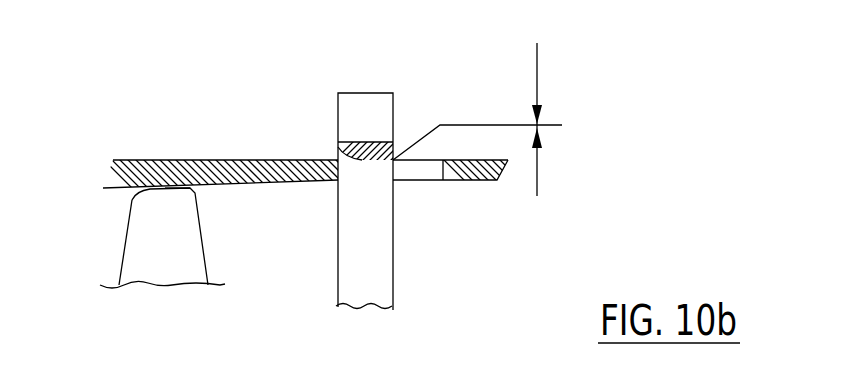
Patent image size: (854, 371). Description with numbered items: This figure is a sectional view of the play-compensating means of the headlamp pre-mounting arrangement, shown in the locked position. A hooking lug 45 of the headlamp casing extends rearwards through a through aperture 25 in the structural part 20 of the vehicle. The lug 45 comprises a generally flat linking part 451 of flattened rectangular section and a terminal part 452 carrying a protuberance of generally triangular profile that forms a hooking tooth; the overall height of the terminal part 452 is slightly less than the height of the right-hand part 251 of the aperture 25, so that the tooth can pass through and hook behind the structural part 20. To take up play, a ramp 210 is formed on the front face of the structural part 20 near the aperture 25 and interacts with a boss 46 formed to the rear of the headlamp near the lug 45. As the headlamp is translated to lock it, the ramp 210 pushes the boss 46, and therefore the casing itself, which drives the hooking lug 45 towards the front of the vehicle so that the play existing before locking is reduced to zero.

The structural part 20 is at (257, 163).
The through aperture 25 is at (432, 193).
The right-hand part of aperture 251 is at (418, 170).
The hooking lug 45 is at (372, 278).
The linking part 451 is at (375, 229).
The terminal part 452 is at (377, 150).
The boss 46 is at (140, 243).
The ramp 210 is at (172, 189).